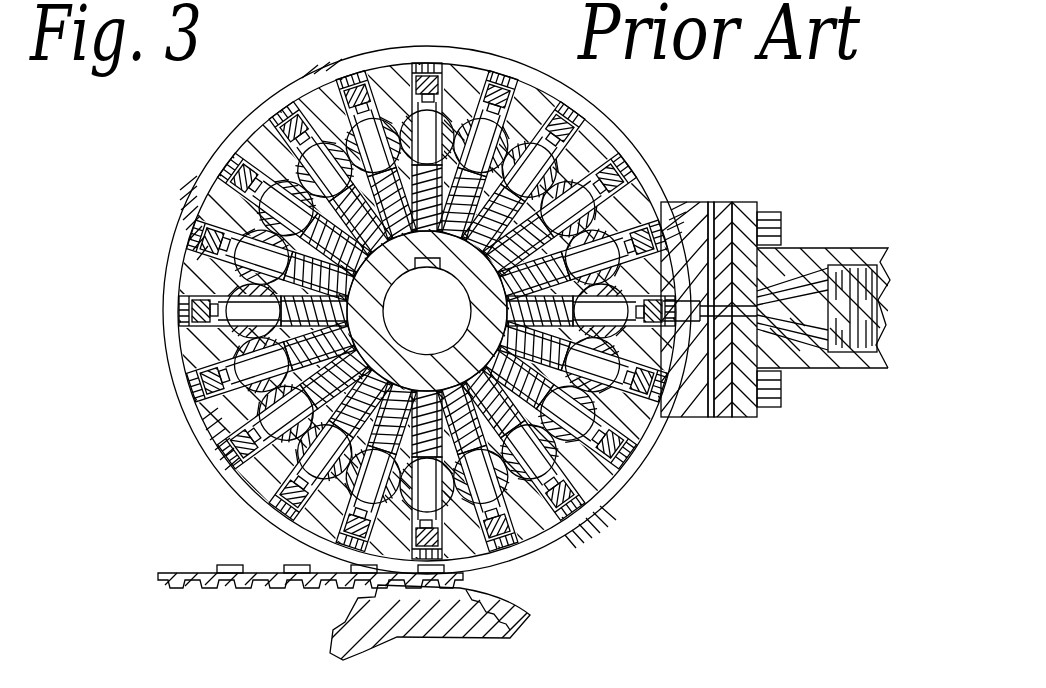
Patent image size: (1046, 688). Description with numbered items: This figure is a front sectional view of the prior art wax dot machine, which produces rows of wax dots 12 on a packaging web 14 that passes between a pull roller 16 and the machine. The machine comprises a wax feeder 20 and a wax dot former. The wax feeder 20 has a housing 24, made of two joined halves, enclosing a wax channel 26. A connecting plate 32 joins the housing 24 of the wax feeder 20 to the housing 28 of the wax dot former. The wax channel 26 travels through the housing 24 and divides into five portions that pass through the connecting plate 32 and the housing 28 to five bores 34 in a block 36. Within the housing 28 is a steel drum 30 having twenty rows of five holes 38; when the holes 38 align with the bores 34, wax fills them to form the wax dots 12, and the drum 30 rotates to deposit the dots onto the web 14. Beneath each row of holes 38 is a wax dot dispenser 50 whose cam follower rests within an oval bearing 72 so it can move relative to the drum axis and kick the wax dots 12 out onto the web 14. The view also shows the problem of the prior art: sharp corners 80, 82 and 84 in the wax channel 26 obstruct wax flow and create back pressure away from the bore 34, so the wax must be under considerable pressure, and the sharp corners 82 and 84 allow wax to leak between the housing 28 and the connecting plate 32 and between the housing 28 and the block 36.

The drum 30 is at (150, 200).
The wax dot dispenser 50 is at (583, 452).
The oval bearing 72 is at (598, 140).
The holes 38 is at (670, 322).
The wax feeder 20 is at (826, 160).
The bores 34 is at (737, 200).
The block 36 is at (706, 240).
The sharp corner 84 is at (707, 417).
The housing 28 is at (723, 417).
The connecting plate 32 is at (747, 417).
The housing 24 is at (857, 255).
The sharp corner 80 is at (833, 368).
The wax channel 26 is at (866, 314).
The sharp corner 82 is at (760, 258).
The web 14 is at (177, 575).
The wax dots 12 is at (220, 565).
The pull roller 16 is at (450, 636).